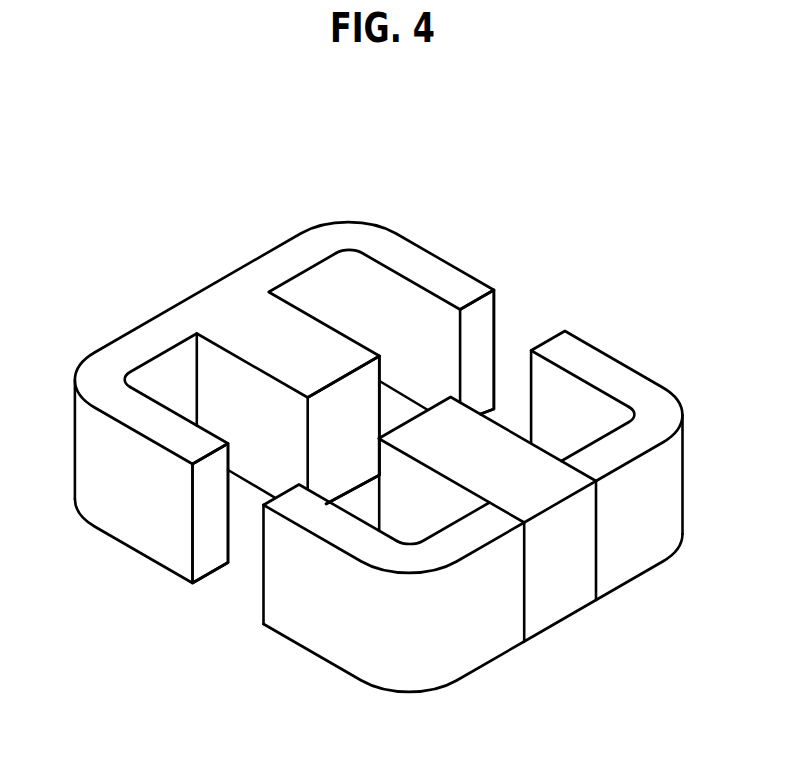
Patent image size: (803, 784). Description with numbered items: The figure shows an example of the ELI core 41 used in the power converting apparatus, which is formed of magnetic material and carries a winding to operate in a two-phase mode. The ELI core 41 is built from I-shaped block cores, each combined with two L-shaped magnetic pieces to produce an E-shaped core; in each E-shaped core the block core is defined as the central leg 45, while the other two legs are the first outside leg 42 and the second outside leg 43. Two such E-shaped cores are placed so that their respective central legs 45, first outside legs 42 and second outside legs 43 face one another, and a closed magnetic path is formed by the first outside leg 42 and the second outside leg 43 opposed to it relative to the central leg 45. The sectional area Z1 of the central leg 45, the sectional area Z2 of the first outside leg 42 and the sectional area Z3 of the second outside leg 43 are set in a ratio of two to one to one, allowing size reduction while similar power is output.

The ELI core 41 is at (335, 369).
The first outside leg 42 is at (487, 647).
The second outside leg 43 is at (643, 553).
The central leg 45 is at (565, 600).
The sectional area of the central leg Z1 is at (362, 400).
The sectional area of the first outside leg Z2 is at (208, 521).
The sectional area of the second outside leg Z3 is at (490, 320).